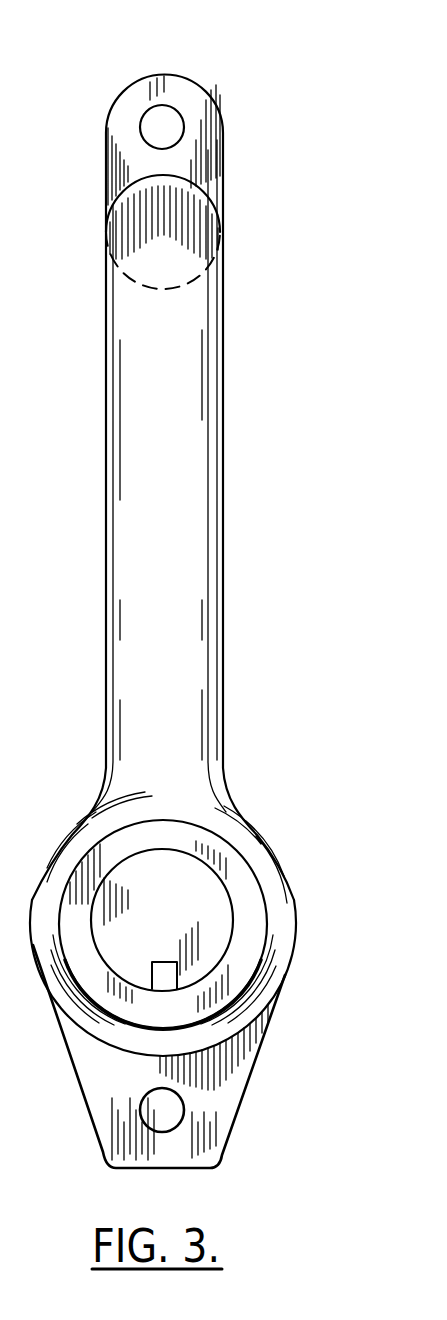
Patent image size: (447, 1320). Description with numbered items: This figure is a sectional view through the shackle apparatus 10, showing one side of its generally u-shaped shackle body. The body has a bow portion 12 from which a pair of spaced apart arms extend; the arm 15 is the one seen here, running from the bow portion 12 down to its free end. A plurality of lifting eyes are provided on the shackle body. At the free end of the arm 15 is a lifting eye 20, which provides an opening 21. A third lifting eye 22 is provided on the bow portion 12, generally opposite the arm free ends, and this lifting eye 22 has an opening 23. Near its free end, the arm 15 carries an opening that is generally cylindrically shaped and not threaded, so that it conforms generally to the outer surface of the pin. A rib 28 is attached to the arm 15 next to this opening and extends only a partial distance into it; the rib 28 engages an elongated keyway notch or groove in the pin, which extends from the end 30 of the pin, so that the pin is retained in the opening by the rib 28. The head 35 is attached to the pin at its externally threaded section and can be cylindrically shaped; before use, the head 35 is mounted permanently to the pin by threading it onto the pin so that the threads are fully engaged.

The shackle apparatus 10 is at (180, 590).
The bow portion 12 is at (163, 464).
The arm 15 is at (179, 591).
The lifting eye 20 is at (208, 1114).
The opening 21 is at (167, 1110).
The lifting eye 22 is at (205, 168).
The opening 23 is at (161, 130).
The rib 28 is at (167, 978).
The end 30 is at (178, 932).
The head 35 is at (227, 857).